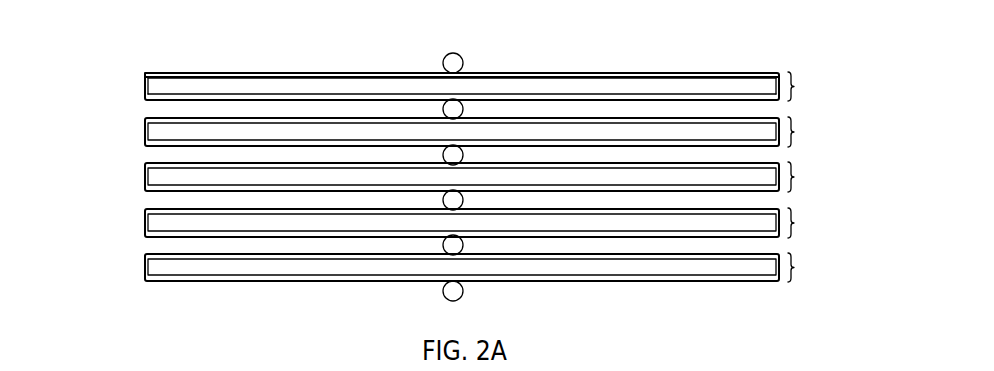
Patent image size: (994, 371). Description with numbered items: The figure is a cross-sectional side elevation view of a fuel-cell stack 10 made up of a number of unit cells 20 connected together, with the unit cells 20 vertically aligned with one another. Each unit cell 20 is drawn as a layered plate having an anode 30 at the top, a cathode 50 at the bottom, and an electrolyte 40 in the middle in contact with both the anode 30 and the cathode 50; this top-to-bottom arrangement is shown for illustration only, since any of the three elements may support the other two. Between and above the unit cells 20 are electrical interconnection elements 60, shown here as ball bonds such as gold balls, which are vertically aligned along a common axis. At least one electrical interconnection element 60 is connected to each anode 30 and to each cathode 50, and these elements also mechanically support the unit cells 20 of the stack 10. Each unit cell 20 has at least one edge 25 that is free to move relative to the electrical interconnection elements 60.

The fuel-cell stack 10 is at (770, 33).
The unit cells 20 is at (794, 86).
The edge 25 is at (418, 172).
The anode 30 is at (145, 77).
The electrolyte 40 is at (145, 88).
The cathode 50 is at (145, 97).
The electrical interconnection elements 60 is at (454, 53).